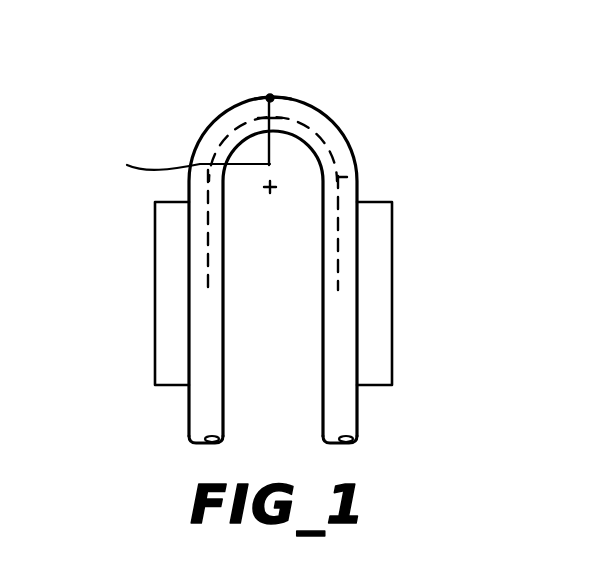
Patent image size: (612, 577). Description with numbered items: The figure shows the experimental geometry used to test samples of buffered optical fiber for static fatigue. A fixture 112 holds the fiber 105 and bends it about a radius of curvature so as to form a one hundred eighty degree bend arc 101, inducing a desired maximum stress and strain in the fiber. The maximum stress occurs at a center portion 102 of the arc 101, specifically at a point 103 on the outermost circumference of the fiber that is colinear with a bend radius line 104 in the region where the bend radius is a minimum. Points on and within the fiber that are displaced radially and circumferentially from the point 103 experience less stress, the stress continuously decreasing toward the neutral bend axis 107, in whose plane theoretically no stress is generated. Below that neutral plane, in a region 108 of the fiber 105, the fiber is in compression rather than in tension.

The bend arc 101 is at (349, 123).
The center portion 102 is at (264, 91).
The point 103 is at (271, 95).
The bend radius line 104 is at (178, 147).
The fiber 105 is at (350, 247).
The neutral bend axis 107 is at (358, 176).
The region 108 is at (265, 123).
The fixture 112 is at (167, 252).